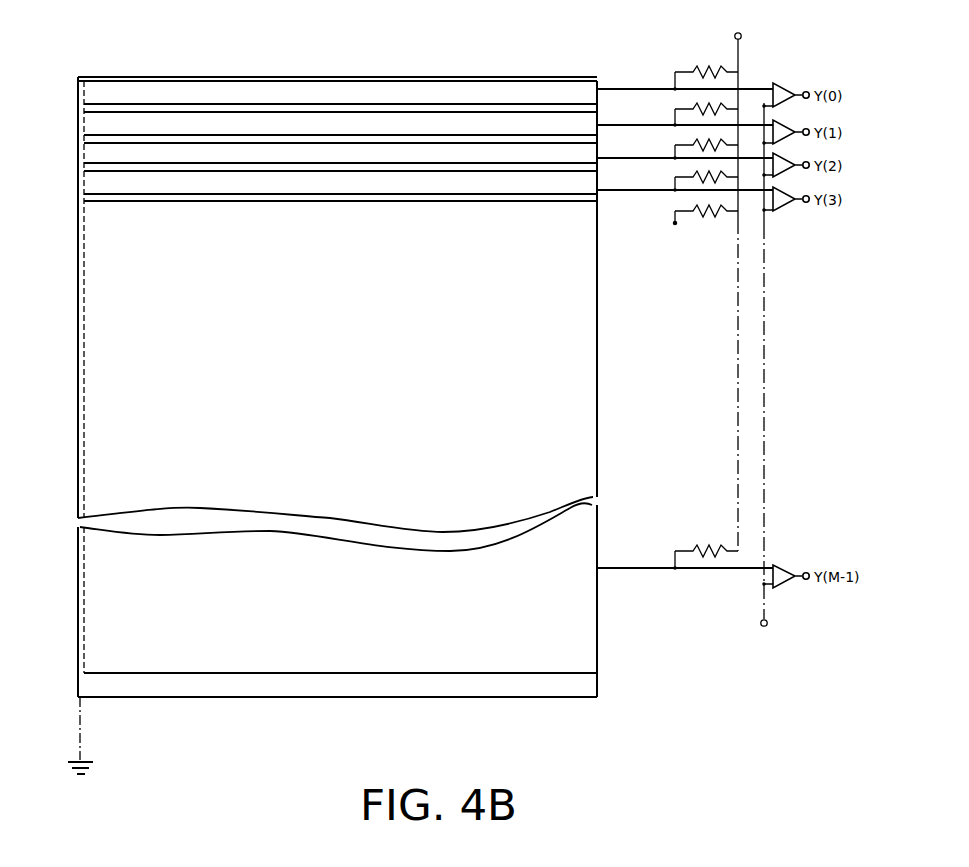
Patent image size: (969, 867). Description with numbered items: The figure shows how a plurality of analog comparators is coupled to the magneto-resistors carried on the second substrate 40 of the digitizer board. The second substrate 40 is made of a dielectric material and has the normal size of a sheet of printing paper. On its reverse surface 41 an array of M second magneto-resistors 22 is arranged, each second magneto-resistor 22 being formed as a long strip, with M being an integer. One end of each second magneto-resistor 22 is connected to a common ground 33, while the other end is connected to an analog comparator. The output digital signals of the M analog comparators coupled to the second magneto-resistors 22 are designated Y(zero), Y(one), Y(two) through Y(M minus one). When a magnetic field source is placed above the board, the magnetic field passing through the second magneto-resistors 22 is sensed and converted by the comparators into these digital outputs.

The second magneto-resistors 22 is at (413, 85).
The second substrate 40 is at (597, 345).
The reverse surface 41 is at (558, 322).
The common ground 33 is at (78, 656).